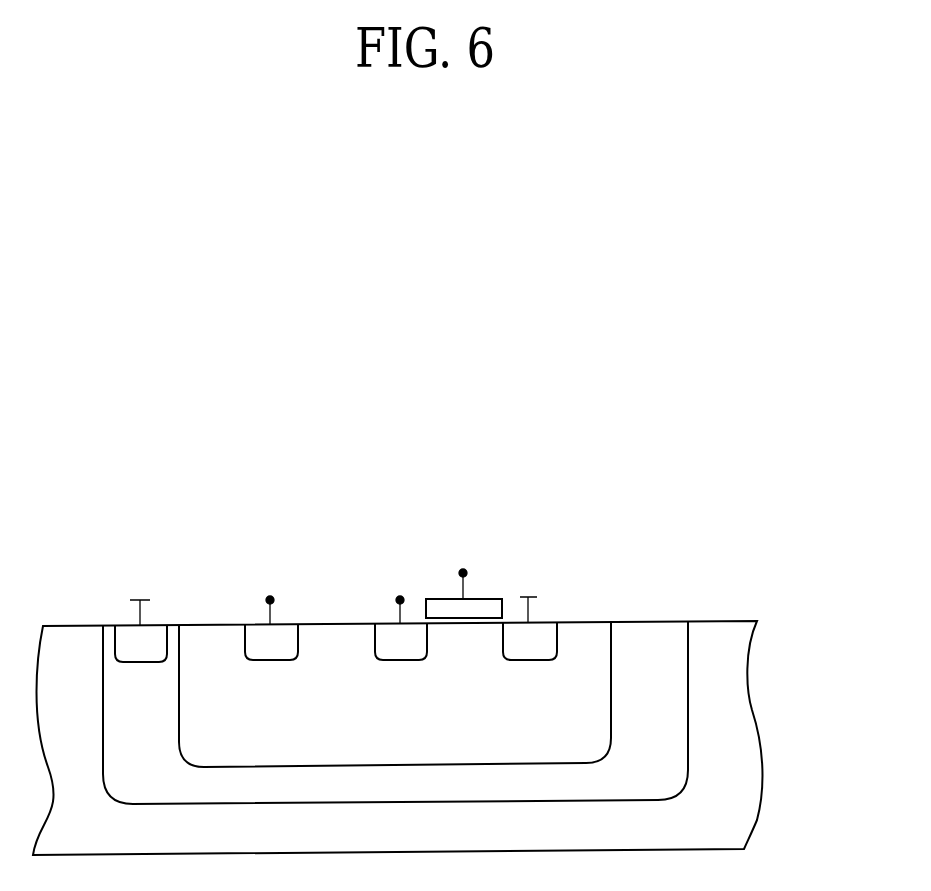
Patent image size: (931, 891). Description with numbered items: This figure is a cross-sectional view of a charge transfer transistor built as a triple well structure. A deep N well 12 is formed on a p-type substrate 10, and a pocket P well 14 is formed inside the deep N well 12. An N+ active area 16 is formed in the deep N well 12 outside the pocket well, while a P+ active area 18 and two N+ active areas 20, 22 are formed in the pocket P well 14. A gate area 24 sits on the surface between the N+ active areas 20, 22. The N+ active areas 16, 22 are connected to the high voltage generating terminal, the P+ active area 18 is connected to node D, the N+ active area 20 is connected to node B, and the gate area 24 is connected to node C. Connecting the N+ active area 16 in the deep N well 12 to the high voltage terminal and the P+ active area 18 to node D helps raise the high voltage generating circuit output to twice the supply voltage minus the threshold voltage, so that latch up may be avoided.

The p-type substrate 10 is at (745, 802).
The deep N well 12 is at (672, 748).
The pocket P well 14 is at (592, 627).
The N+ active area 16 is at (131, 627).
The P+ active area 18 is at (261, 627).
The N+ active area 20 is at (388, 626).
The N+ active area 22 is at (542, 626).
The gate area 24 is at (477, 599).